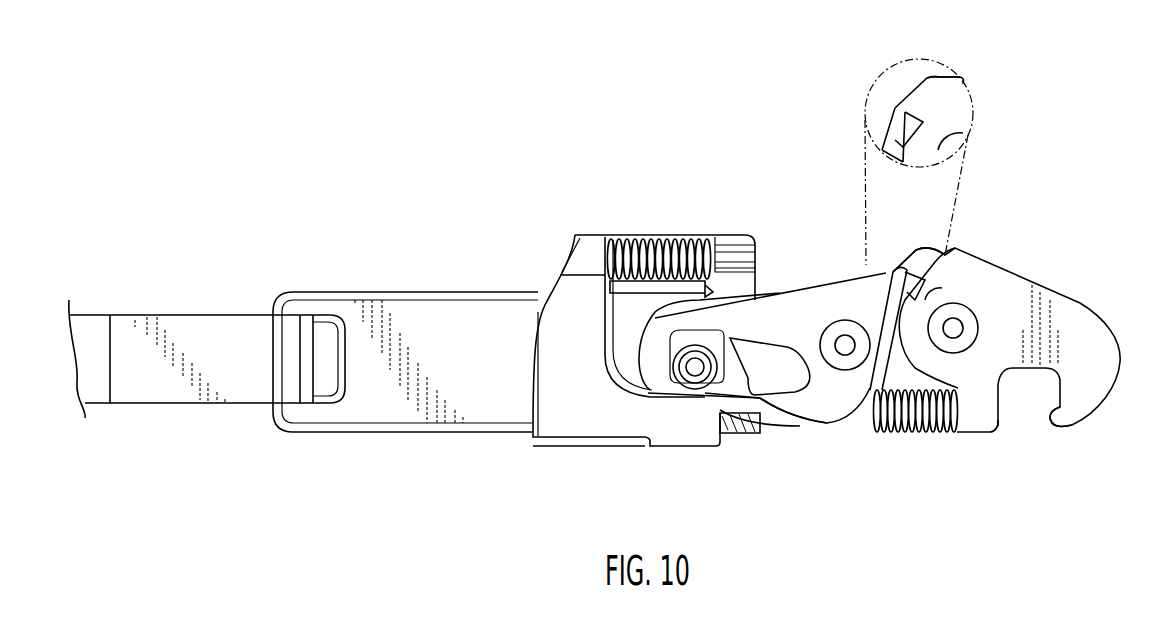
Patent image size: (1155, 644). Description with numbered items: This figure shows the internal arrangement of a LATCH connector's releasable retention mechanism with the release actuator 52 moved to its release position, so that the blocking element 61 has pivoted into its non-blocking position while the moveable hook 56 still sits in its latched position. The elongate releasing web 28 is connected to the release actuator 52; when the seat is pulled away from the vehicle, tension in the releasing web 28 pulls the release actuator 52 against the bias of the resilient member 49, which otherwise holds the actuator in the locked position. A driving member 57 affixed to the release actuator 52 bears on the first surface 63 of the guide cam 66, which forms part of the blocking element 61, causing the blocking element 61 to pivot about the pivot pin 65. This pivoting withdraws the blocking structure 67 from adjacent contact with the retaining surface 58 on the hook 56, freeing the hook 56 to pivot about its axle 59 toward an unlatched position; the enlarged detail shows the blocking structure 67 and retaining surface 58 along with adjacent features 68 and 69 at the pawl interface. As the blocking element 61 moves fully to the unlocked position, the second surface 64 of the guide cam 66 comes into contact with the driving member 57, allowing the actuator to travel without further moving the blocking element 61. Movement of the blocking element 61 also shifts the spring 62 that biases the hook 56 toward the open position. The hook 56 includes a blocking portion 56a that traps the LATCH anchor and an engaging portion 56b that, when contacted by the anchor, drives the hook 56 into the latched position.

The releasing web 28 is at (157, 405).
The release actuator 52 is at (358, 298).
The resilient member 49 is at (636, 230).
The driving member 57 is at (697, 365).
The blocking element 61 is at (800, 290).
The second surface 64 is at (763, 341).
The first surface 63 is at (756, 389).
The guide cam 66 is at (748, 378).
The pivot pin 65 is at (846, 340).
The spring 62 is at (920, 433).
The moveable hook 56 is at (1082, 301).
The blocking portion 56a is at (1066, 428).
The engaging portion 56b is at (1003, 427).
The axle 59 is at (956, 328).
The blocking structure 67 is at (898, 104).
The pawl surface 68 is at (923, 78).
The retaining surface 58 is at (912, 118).
The pawl recess 69 is at (910, 147).